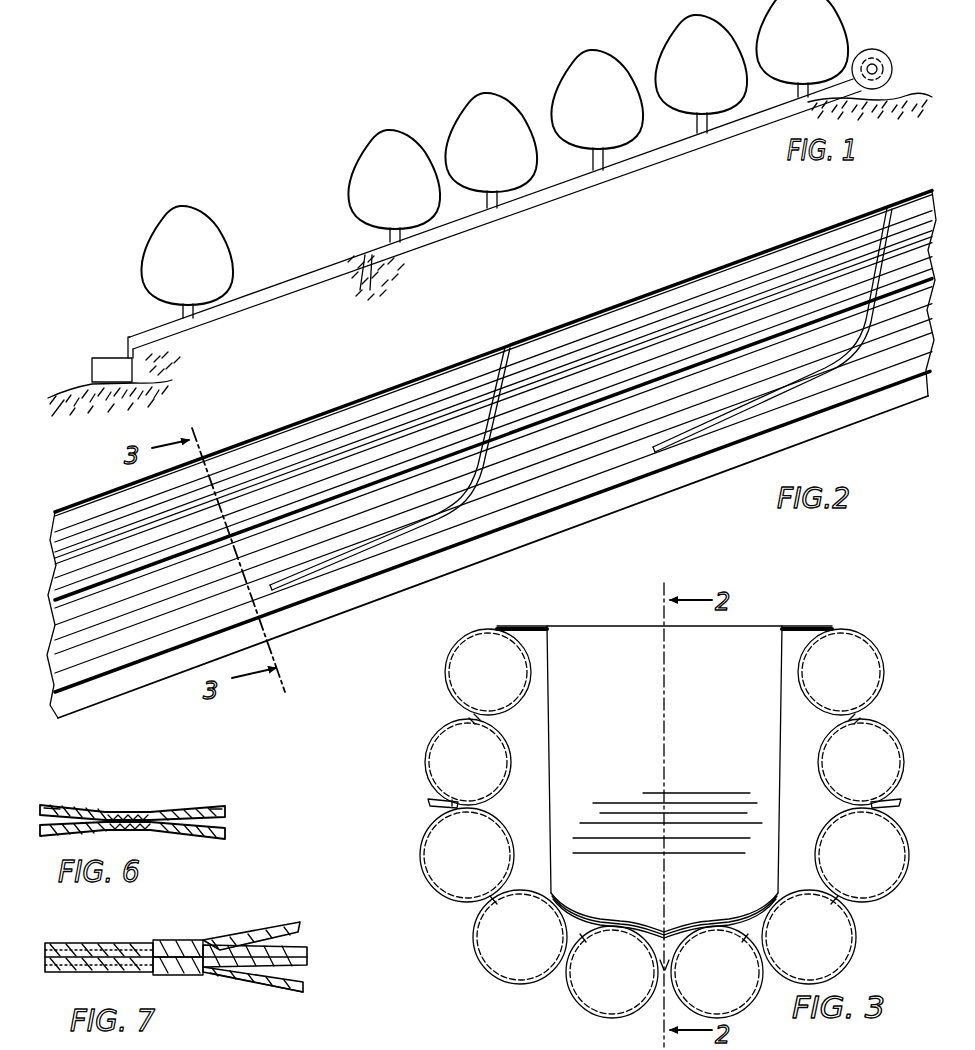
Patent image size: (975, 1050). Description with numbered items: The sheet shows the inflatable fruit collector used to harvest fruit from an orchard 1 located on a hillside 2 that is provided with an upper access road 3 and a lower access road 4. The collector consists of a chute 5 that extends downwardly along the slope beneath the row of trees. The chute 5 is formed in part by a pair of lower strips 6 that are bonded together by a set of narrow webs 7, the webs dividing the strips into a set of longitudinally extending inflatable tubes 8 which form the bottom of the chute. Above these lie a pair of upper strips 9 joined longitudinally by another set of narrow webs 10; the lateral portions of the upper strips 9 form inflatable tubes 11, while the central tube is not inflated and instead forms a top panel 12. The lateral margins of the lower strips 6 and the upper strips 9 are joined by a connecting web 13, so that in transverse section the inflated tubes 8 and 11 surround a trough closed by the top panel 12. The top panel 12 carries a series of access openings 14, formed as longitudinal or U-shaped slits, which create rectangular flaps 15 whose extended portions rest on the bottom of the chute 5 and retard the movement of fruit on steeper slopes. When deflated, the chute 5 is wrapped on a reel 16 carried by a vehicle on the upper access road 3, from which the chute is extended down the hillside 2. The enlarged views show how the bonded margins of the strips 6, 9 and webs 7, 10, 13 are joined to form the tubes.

In FIG. 1, the orchard 1 is at (364, 128).
In FIG. 1, the hillside 2 is at (58, 396).
In FIG. 1, the upper access road 3 is at (905, 99).
In FIG. 1, the lower access road 4 is at (88, 383).
In FIG. 1, the chute 5 is at (448, 238).
In FIG. 2, the chute 5 is at (700, 262).
In FIG. 3, the chute 5 is at (416, 757).
In FIG. 6, the lower strips 6 is at (46, 807).
In FIG. 7, the lower strips 6 is at (305, 984).
In FIG. 2, the narrow webs 7 is at (127, 670).
In FIG. 3, the narrow webs 7 is at (490, 898).
In FIG. 6, the narrow webs 7 is at (140, 817).
In FIG. 7, the narrow webs 7 is at (177, 975).
In FIG. 2, the inflatable tubes 8 is at (60, 717).
In FIG. 3, the inflatable tubes 8 is at (476, 858).
In FIG. 6, the inflatable tubes 8 is at (80, 812).
In FIG. 7, the inflatable tubes 8 is at (292, 993).
In FIG. 2, the upper strips 9 is at (56, 545).
In FIG. 7, the upper strips 9 is at (308, 947).
In FIG. 2, the narrow webs 10 is at (108, 537).
In FIG. 3, the narrow webs 10 is at (474, 716).
In FIG. 7, the narrow webs 10 is at (174, 943).
In FIG. 3, the inflatable tubes 11 is at (496, 682).
In FIG. 7, the inflatable tubes 11 is at (297, 923).
In FIG. 2, the top panel 12 is at (522, 327).
In FIG. 3, the top panel 12 is at (525, 625).
In FIG. 3, the connecting web 13 is at (430, 803).
In FIG. 7, the connecting web 13 is at (98, 926).
In FIG. 2, the access openings 14 is at (398, 392).
In FIG. 3, the access openings 14 is at (560, 628).
In FIG. 2, the rectangular flaps 15 is at (493, 373).
In FIG. 1, the reel 16 is at (877, 53).